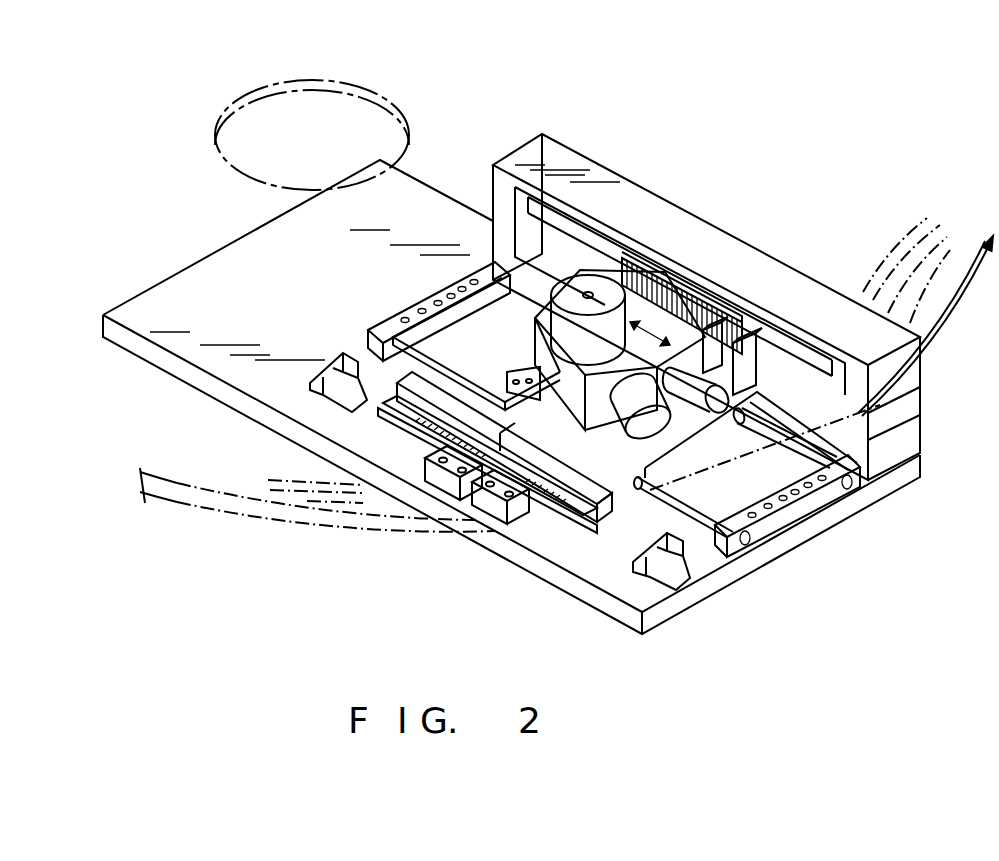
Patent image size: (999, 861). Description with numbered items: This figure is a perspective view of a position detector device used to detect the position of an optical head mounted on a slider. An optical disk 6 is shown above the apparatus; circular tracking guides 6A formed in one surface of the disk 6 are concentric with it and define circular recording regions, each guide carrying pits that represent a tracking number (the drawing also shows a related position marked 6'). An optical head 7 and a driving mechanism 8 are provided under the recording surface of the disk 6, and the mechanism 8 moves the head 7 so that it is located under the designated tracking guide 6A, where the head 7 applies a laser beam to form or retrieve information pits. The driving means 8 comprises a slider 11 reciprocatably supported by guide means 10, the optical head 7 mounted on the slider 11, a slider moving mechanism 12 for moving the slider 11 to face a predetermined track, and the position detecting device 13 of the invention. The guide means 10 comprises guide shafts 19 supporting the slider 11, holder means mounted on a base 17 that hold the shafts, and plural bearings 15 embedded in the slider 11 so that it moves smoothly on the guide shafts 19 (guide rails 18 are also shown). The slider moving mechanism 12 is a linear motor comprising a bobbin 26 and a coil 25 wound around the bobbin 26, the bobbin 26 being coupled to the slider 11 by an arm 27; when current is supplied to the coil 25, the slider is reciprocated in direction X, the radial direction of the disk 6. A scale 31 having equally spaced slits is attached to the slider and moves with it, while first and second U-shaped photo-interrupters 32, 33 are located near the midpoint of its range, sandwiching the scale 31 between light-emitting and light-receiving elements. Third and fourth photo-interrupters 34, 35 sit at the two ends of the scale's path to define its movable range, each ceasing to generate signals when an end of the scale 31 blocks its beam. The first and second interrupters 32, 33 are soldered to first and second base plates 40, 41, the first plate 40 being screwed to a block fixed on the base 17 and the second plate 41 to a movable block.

The optical disk 6 is at (317, 308).
The wafer sweep arc 6' is at (548, 454).
The tracking guide 6A is at (956, 232).
The optical head 7 is at (546, 329).
The driving mechanism 8 is at (772, 572).
The guide means 10 is at (712, 548).
The slider 11 is at (634, 497).
The slider moving mechanism 12 is at (718, 246).
The position detecting device 13 is at (526, 522).
The bearings 15 is at (722, 416).
The base 17 is at (427, 206).
The guide rail 18 is at (440, 301).
The guide shafts 19 is at (762, 491).
The coil 25 is at (746, 296).
The bobbin 26 is at (762, 336).
The arm 27 is at (762, 370).
The scale 31 is at (584, 517).
The first U-shaped interrupter 32 is at (496, 437).
The second U-shaped interrupter 33 is at (517, 453).
The third photo-interrupter 34 is at (324, 371).
The fourth photo-interrupter 35 is at (641, 591).
The first base plate 40 is at (441, 446).
The second base plate 41 is at (503, 485).